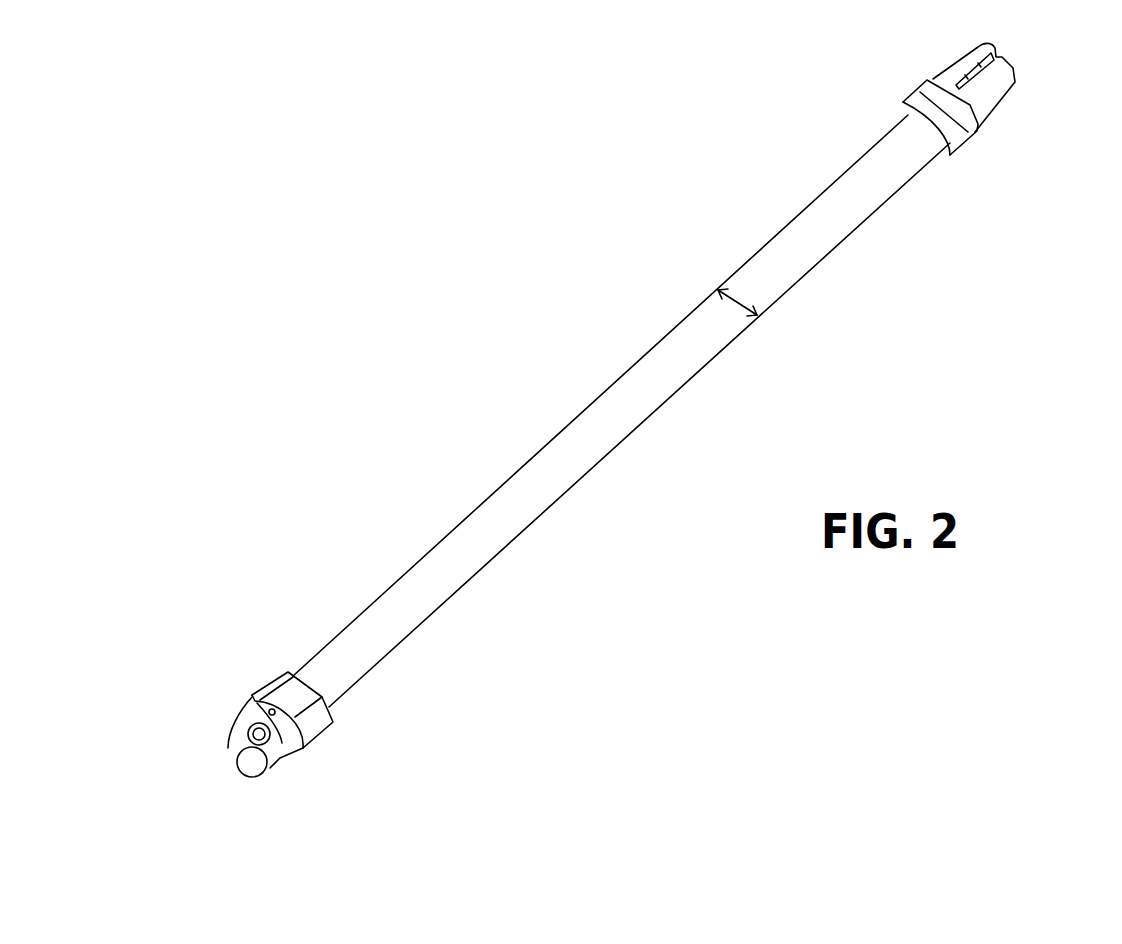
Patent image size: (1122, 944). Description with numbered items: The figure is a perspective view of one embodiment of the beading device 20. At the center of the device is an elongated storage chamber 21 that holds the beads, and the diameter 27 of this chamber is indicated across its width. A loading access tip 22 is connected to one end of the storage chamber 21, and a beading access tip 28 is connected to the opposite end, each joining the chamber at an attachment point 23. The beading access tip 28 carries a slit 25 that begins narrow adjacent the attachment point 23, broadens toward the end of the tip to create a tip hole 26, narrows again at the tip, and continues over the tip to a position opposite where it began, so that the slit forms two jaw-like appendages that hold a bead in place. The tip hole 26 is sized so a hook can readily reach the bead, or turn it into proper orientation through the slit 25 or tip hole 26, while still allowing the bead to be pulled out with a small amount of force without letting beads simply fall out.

The device 20 is at (983, 377).
The storage chamber 21 is at (628, 395).
The loading access tip 22 is at (1037, 93).
The attachment point 23 is at (936, 92).
The slit 25 is at (278, 752).
The tip hole 26 is at (275, 757).
The rod diameter 27 is at (733, 300).
The beading access tip 28 is at (252, 655).